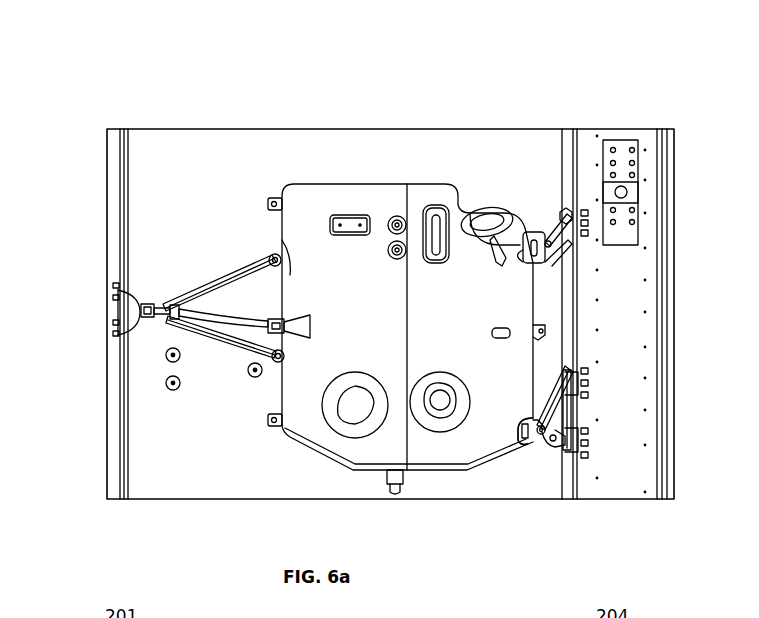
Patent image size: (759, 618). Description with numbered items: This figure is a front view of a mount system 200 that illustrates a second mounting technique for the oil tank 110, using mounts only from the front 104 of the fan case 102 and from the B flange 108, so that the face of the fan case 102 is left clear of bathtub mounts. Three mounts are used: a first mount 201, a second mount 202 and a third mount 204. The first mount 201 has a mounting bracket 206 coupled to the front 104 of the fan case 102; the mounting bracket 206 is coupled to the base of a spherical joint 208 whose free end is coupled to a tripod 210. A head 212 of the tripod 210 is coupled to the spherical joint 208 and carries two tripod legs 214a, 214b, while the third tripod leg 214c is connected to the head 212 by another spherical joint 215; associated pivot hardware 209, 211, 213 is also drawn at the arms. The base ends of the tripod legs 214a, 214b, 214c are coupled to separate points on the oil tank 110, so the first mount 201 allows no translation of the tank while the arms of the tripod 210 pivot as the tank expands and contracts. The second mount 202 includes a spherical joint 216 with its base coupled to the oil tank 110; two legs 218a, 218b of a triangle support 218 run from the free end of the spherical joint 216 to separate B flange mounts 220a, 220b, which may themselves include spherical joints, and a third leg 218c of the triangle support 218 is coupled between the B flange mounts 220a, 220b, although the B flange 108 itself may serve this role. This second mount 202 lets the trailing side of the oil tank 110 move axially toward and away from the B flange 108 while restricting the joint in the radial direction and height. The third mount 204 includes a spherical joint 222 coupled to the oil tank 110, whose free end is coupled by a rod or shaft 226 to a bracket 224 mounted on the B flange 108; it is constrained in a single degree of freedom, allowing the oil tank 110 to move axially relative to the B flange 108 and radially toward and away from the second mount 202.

The assembly 200 is at (367, 57).
The fan case 102 is at (220, 157).
The front of the fan case 104 is at (128, 200).
The B flange 108 is at (657, 401).
The oil tank 110 is at (330, 437).
The first mount 201 is at (136, 379).
The second mount 202 is at (570, 476).
The third mount 204 is at (537, 198).
The mounting bracket 206 is at (123, 298).
The spherical joint 208 is at (146, 305).
The pivot 209 is at (280, 262).
The tripod 210 is at (188, 305).
The block 211 is at (290, 322).
The head of the tripod 212 is at (158, 323).
The wedge 213 is at (282, 370).
The tripod leg 214a is at (243, 278).
The tripod leg 214b is at (230, 352).
The third tripod leg 214c is at (258, 308).
The spherical joint 215 is at (178, 320).
The spherical joint 216 is at (537, 442).
The triangle support 218 is at (586, 395).
The leg of the triangle support 218a is at (550, 398).
The leg of the triangle support 218b is at (552, 442).
The third leg of the triangle support 218c is at (567, 407).
The B flange mount 220a is at (573, 377).
The B flange mount 220b is at (573, 435).
The spherical joint 222 is at (538, 257).
The bracket 224 is at (560, 228).
The rod or shaft 226 is at (551, 228).